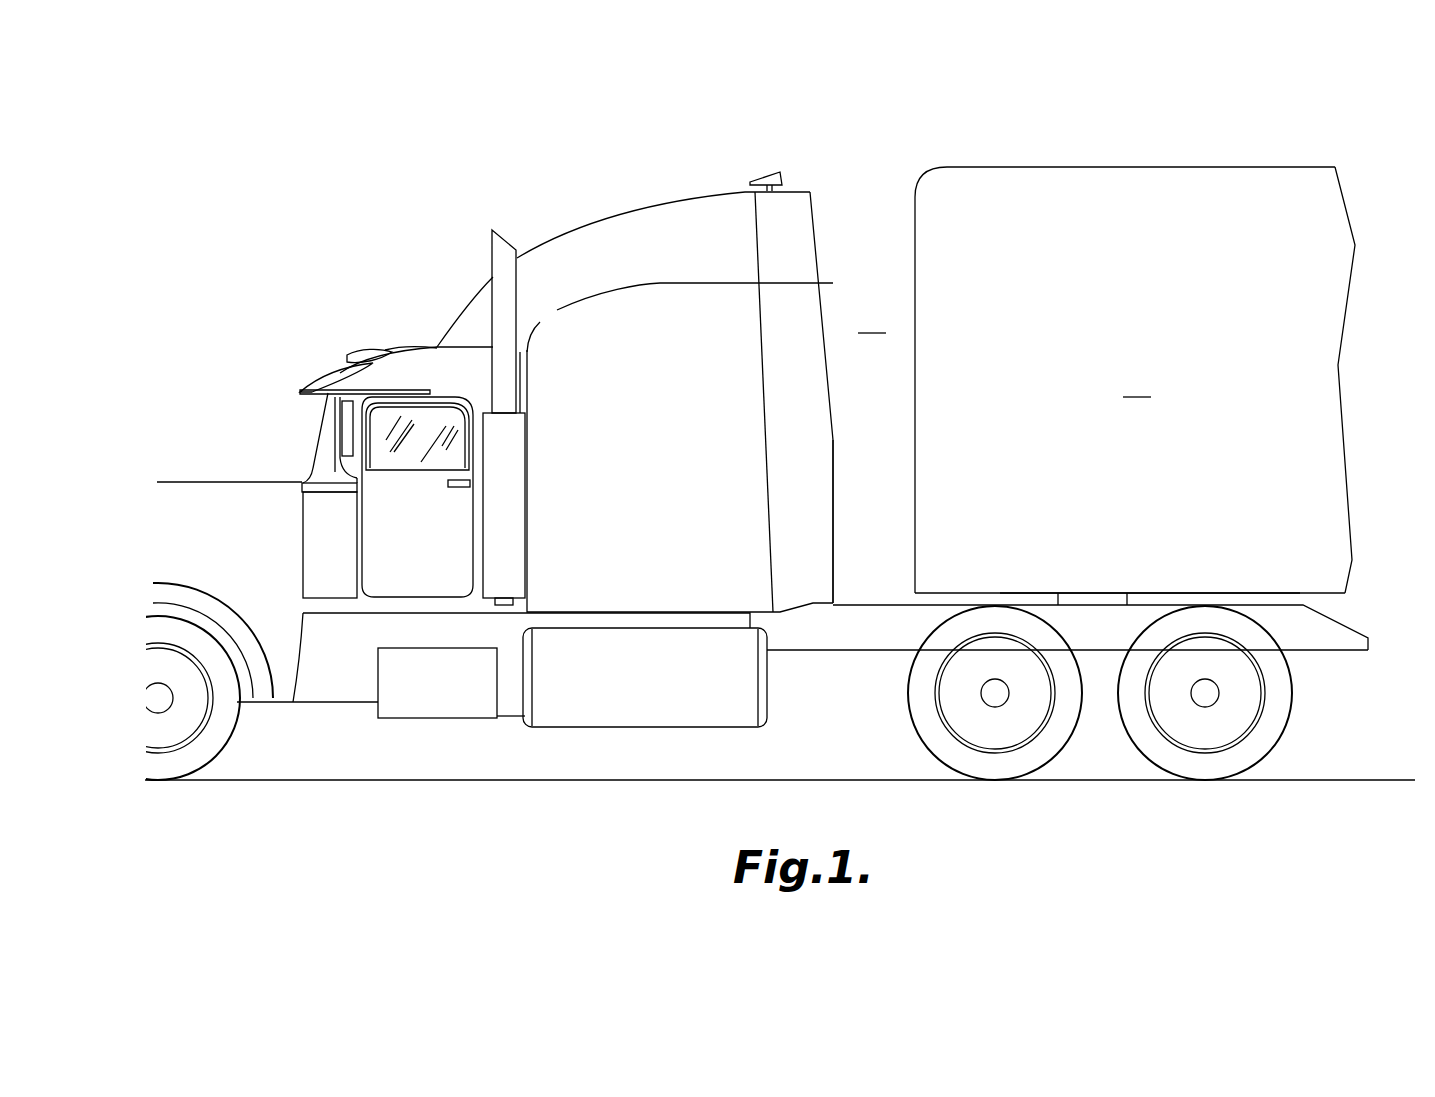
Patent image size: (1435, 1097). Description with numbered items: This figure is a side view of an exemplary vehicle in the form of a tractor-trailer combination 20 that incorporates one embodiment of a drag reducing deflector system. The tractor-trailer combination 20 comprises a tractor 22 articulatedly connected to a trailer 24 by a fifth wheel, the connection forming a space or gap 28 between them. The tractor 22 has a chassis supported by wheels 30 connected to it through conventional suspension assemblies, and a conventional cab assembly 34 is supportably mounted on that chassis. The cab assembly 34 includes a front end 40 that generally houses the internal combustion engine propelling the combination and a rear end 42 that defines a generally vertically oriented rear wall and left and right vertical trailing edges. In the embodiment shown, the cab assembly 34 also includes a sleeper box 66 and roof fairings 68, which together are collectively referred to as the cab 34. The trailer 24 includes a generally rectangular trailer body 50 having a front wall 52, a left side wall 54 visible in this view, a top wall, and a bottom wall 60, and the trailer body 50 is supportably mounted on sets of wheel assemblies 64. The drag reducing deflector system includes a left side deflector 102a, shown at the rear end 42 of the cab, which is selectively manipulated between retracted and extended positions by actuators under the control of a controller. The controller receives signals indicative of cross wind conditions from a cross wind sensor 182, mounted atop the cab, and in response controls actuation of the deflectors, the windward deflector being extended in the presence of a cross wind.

The tractor-trailer combination 20 is at (258, 282).
The tractor 22 is at (318, 380).
The trailer 24 is at (938, 161).
The gap 28 is at (710, 402).
The wheels 30 is at (228, 730).
The cab assembly 34 is at (416, 362).
The front end 40 is at (240, 482).
The rear end 42 is at (763, 328).
The trailer body 50 is at (1350, 388).
The front wall 52 is at (912, 420).
The left side wall 54 is at (1150, 480).
The bottom wall 60 is at (1305, 603).
The wheel assemblies 64 is at (1065, 730).
The sleeper box 66 is at (605, 600).
The roof fairings 68 is at (595, 232).
The left side deflector 102a is at (835, 537).
The cross wind sensor 182 is at (792, 176).